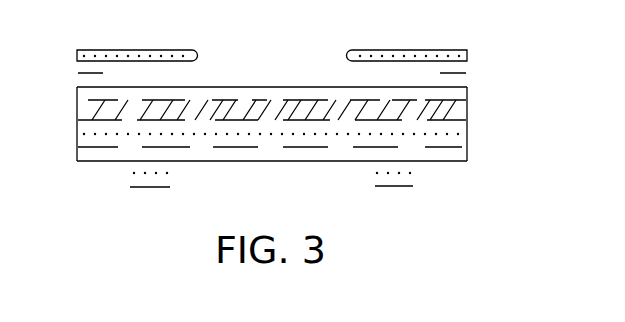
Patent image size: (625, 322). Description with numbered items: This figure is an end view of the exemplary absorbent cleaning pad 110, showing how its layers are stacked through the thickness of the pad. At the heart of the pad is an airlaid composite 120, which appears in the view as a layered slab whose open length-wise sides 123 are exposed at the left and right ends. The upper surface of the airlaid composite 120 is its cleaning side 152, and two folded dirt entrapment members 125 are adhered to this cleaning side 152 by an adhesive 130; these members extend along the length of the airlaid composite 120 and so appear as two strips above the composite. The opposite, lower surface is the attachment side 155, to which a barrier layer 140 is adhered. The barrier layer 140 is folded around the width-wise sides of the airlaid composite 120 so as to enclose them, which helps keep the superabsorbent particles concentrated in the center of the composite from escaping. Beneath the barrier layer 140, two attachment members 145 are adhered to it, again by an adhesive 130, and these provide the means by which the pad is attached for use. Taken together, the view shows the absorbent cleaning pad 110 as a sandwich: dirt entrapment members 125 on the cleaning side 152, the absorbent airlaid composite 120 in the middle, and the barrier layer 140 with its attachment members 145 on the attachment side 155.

The absorbent cleaning pad 110 is at (488, 177).
The airlaid composite 120 is at (242, 108).
The open length-wise sides 123 is at (77, 117).
The folded dirt entrapment members 125 is at (113, 50).
The adhesive 130 is at (80, 73).
The barrier layer 140 is at (310, 162).
The attachment members 145 is at (150, 188).
The cleaning side 152 is at (308, 87).
The attachment side 155 is at (357, 162).